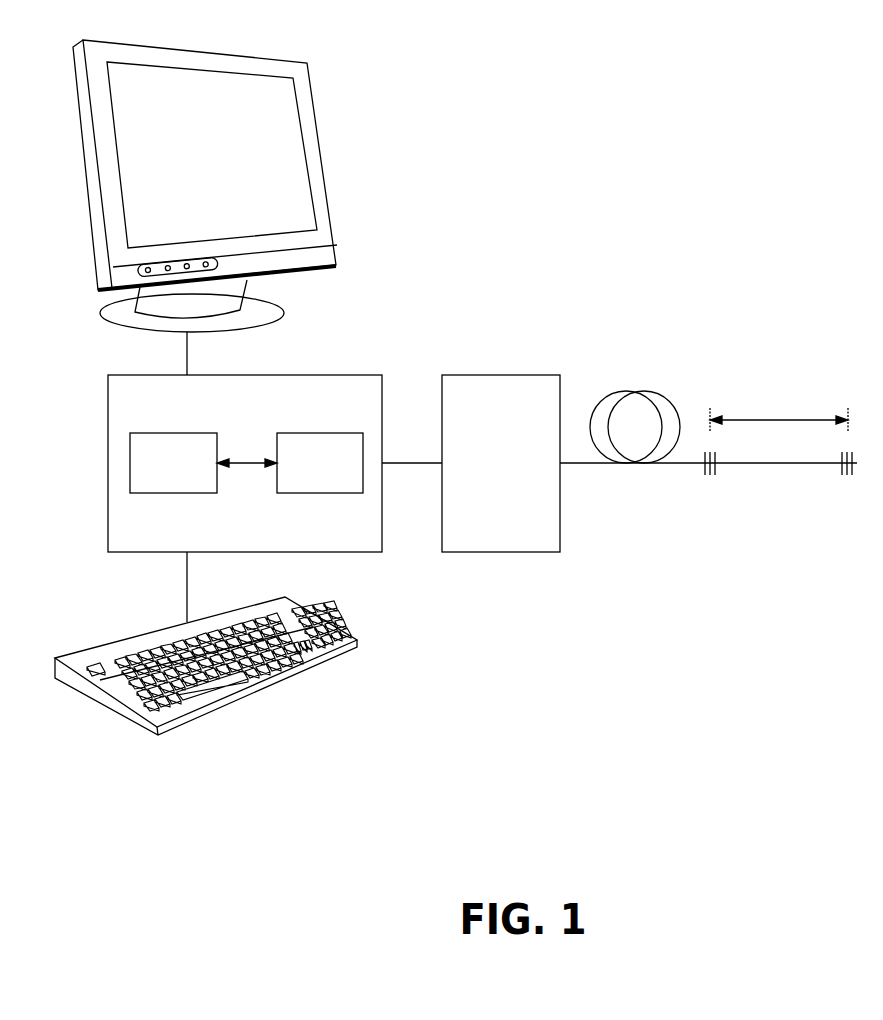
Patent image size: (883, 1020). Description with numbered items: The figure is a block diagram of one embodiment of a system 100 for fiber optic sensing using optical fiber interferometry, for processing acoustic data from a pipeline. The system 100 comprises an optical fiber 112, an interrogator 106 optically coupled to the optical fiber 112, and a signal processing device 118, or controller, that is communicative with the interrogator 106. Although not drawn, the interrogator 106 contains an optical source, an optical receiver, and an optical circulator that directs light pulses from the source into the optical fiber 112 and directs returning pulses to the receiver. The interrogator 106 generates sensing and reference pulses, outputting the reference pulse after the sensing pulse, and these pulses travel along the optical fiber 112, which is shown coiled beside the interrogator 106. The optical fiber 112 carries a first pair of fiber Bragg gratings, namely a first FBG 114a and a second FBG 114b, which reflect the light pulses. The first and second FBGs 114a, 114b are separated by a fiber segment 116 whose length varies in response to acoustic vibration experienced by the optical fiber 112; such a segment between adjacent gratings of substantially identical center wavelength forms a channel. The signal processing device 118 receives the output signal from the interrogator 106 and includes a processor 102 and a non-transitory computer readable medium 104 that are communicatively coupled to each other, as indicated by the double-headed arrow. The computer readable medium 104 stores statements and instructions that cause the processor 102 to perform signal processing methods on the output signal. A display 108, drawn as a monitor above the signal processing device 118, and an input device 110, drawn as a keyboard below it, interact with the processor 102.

The system for fiber optic sensing 100 is at (682, 87).
The processor 102 is at (152, 478).
The non-transitory computer readable medium 104 is at (299, 478).
The interrogator 106 is at (480, 478).
The display 108 is at (185, 50).
The input device 110 is at (270, 683).
The optical fiber 112 is at (610, 392).
The first fiber Bragg grating 114a is at (710, 482).
The second fiber Bragg grating 114b is at (847, 482).
The fiber segment 116 is at (777, 418).
The signal processing device 118 is at (224, 410).